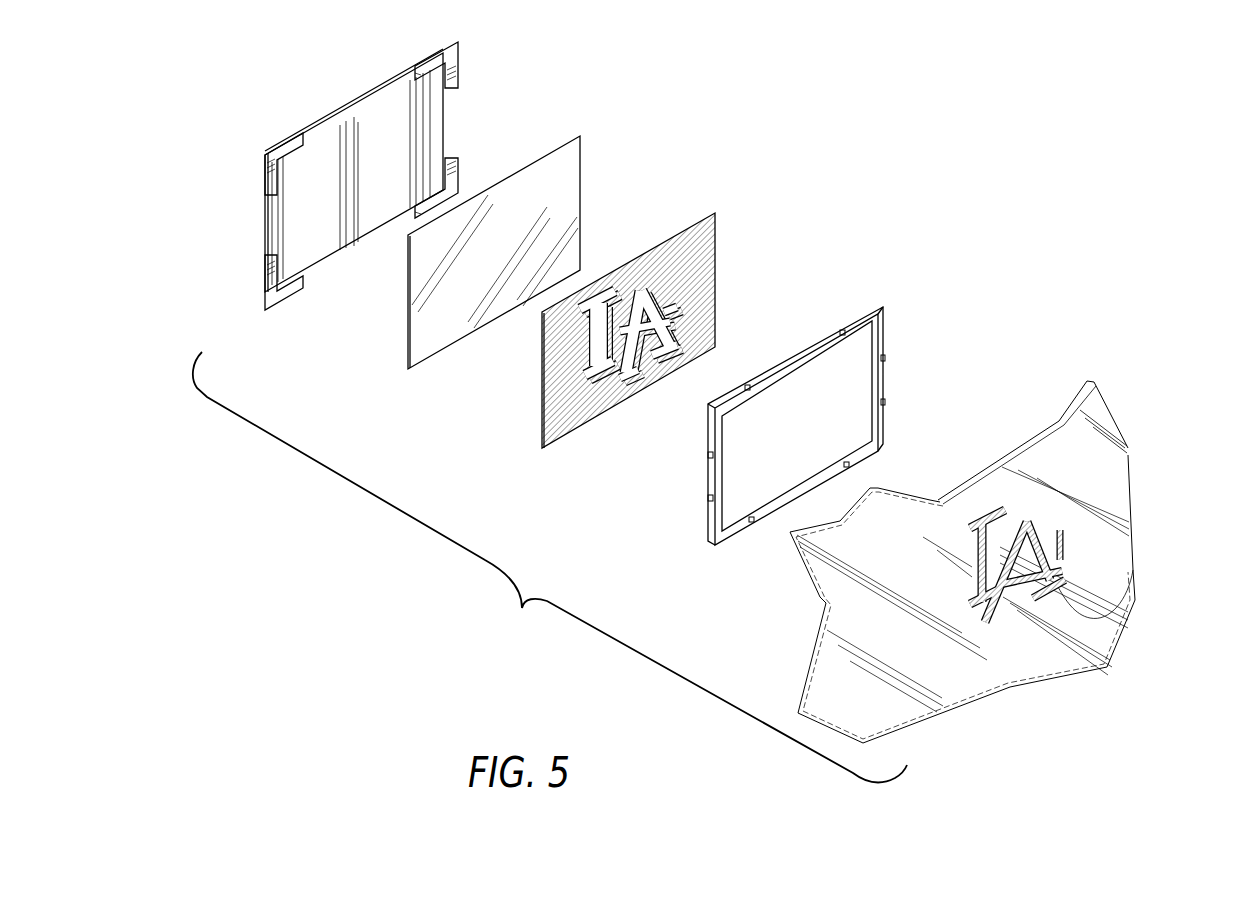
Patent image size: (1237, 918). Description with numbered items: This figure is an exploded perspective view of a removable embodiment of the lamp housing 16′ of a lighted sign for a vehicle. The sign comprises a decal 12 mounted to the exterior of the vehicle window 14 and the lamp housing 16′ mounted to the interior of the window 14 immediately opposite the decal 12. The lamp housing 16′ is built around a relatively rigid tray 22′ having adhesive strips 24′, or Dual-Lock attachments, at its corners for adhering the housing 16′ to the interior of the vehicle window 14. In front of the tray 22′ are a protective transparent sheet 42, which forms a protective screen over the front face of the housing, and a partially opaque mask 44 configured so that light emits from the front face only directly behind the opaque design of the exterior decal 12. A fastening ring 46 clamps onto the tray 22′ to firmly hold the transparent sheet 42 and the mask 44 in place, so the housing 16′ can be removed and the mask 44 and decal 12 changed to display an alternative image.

The decal 12 is at (1134, 572).
The vehicle window 14 is at (1097, 408).
The lamp housing 16′ is at (492, 630).
The tray 22′ is at (348, 107).
The adhesive strips 24′ is at (463, 70).
The transparent sheet 42 is at (580, 189).
The mask 44 is at (717, 260).
The fastening ring 46 is at (883, 356).